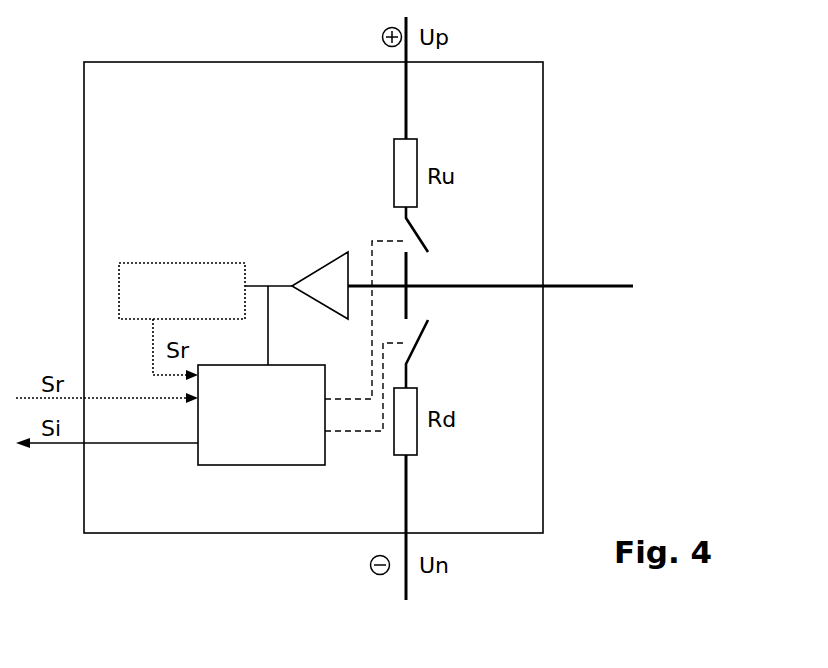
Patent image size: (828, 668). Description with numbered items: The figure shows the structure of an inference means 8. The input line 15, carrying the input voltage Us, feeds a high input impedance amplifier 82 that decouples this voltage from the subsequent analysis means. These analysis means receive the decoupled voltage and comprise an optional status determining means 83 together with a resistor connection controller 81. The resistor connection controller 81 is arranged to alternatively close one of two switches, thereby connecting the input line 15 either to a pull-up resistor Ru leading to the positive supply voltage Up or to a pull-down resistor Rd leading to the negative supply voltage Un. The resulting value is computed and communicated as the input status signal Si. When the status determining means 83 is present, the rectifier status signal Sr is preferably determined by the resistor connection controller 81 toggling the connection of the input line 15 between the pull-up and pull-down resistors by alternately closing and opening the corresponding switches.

The inference means 8 is at (313, 297).
The resistor connection controller 81 is at (261, 415).
The high input impedance amplifier 82 is at (325, 282).
The status determining means 83 is at (182, 291).
The input line 15 is at (490, 302).